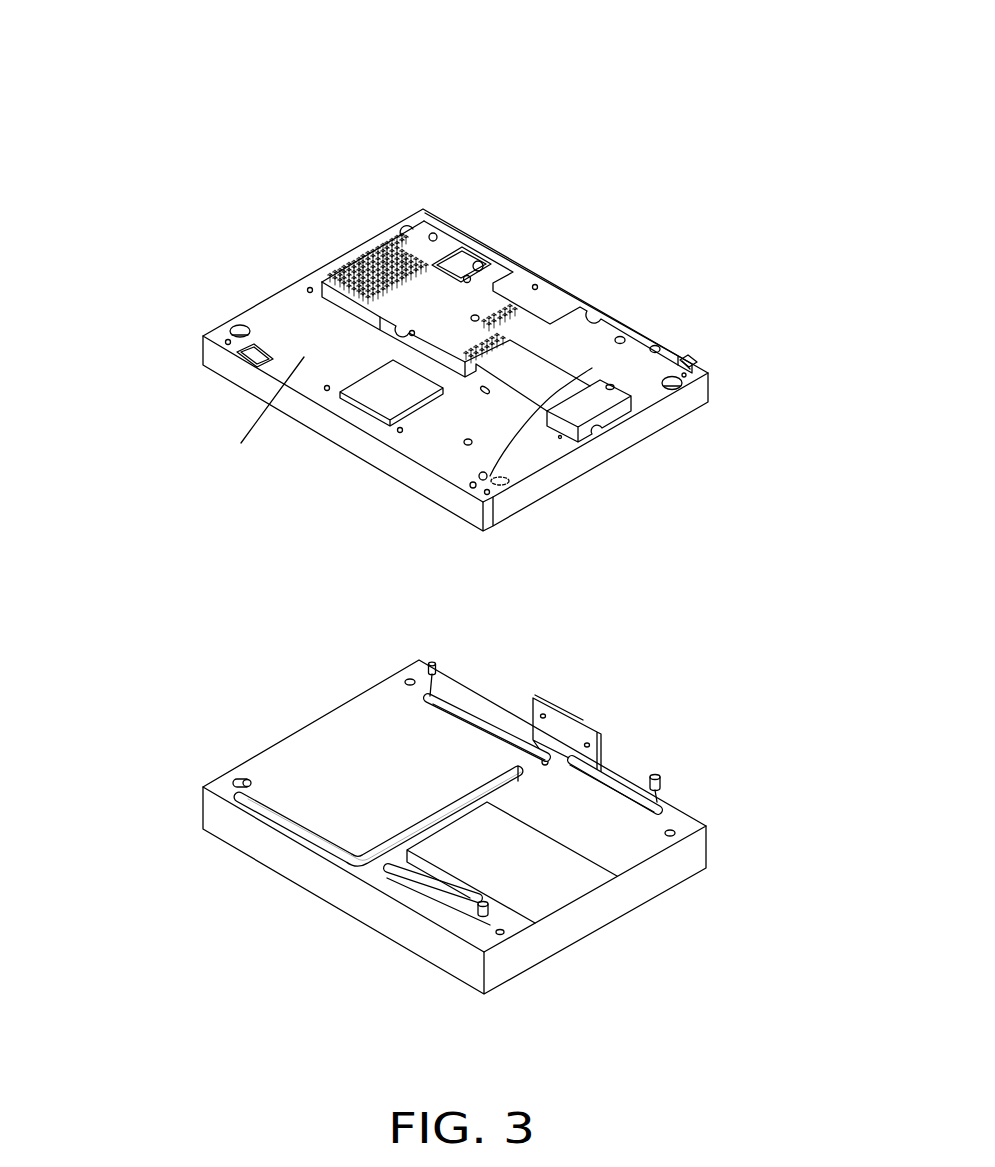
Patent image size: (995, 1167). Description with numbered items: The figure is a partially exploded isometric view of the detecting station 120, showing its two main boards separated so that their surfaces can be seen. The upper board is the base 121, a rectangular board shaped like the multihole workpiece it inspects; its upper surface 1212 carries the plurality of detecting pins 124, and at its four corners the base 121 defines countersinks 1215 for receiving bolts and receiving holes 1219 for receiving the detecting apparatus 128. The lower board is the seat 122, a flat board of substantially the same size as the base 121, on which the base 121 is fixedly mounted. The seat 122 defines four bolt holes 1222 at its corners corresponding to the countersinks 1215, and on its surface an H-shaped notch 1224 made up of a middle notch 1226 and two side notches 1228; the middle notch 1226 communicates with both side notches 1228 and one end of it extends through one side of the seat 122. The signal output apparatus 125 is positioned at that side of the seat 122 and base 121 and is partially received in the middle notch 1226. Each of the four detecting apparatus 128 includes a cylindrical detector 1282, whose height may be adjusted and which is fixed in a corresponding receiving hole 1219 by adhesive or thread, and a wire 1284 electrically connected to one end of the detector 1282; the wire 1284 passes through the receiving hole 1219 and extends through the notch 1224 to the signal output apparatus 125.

The detecting station 120 is at (479, 35).
The base 121 is at (448, 200).
The seat 122 is at (406, 967).
The detecting pins 124 is at (538, 298).
The signal output apparatus 125 is at (562, 752).
The detecting apparatus 128 is at (437, 793).
The upper surface 1212 is at (256, 415).
The countersink 1215 is at (510, 480).
The receiving hole 1219 is at (250, 355).
The bolt hole 1222 is at (408, 679).
The notch 1224 is at (600, 919).
The middle notch 1226 is at (482, 808).
The side notch 1228 is at (495, 934).
The detector 1282 is at (661, 782).
The wire 1284 is at (615, 786).